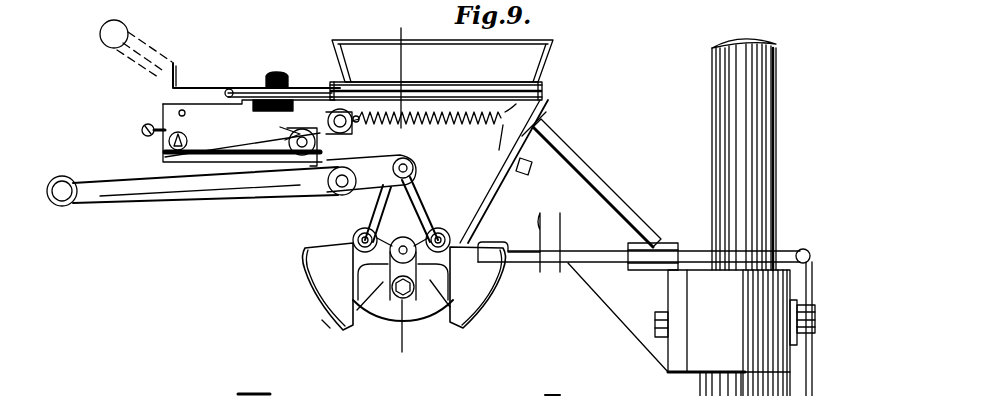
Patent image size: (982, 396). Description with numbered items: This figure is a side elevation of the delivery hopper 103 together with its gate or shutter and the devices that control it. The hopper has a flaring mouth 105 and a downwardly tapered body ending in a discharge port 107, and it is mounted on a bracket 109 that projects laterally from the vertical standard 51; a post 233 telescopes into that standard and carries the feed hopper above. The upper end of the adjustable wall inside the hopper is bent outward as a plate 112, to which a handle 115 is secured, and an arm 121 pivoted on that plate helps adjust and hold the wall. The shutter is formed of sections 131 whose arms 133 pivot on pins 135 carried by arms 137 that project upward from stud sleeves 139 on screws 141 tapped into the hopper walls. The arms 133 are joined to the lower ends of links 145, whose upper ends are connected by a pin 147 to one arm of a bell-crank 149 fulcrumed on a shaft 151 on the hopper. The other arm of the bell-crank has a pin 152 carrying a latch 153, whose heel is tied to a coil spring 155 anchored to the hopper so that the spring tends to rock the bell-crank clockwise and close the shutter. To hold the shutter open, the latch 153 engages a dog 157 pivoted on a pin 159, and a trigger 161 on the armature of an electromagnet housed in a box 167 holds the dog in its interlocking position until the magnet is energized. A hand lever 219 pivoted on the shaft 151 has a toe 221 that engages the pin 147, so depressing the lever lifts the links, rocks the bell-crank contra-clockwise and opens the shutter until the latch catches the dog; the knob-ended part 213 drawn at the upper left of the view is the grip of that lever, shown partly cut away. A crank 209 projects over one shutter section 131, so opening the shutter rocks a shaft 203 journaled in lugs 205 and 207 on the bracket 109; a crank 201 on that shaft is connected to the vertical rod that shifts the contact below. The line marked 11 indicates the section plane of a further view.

The section line 11- 11 is at (403, 192).
The vertical standard 51 is at (700, 380).
The delivery hopper 103 is at (538, 133).
The flaring mouth 105 is at (370, 50).
The discharge port 107 is at (421, 315).
The bracket 109 is at (582, 180).
The plate 112 is at (229, 89).
The handle 115 is at (178, 74).
The arm 121 is at (287, 85).
The shutter sections 131 is at (312, 280).
The arms 133 is at (402, 246).
The pins 135 is at (441, 252).
The arms 137 is at (390, 268).
The stud sleeves 139 is at (401, 298).
The screws 141 is at (398, 296).
The links 145 is at (421, 210).
The pin 147 is at (415, 168).
The bell-crank 149 is at (377, 168).
The shaft 151 is at (336, 197).
The pin 152 is at (362, 128).
The latch 153 is at (271, 129).
The coil spring 155 is at (472, 112).
The dog 157 is at (226, 144).
The pin 159 is at (175, 153).
The trigger 161 is at (178, 140).
The box 167 is at (165, 146).
The crank 201 is at (803, 248).
The shaft 203 is at (597, 258).
The lug 205 is at (572, 214).
The lug 207 is at (668, 244).
The crank 209 is at (492, 242).
The handle 213 is at (142, 38).
The hand lever 219 is at (232, 186).
The toe 221 is at (380, 194).
The post 233 is at (712, 99).